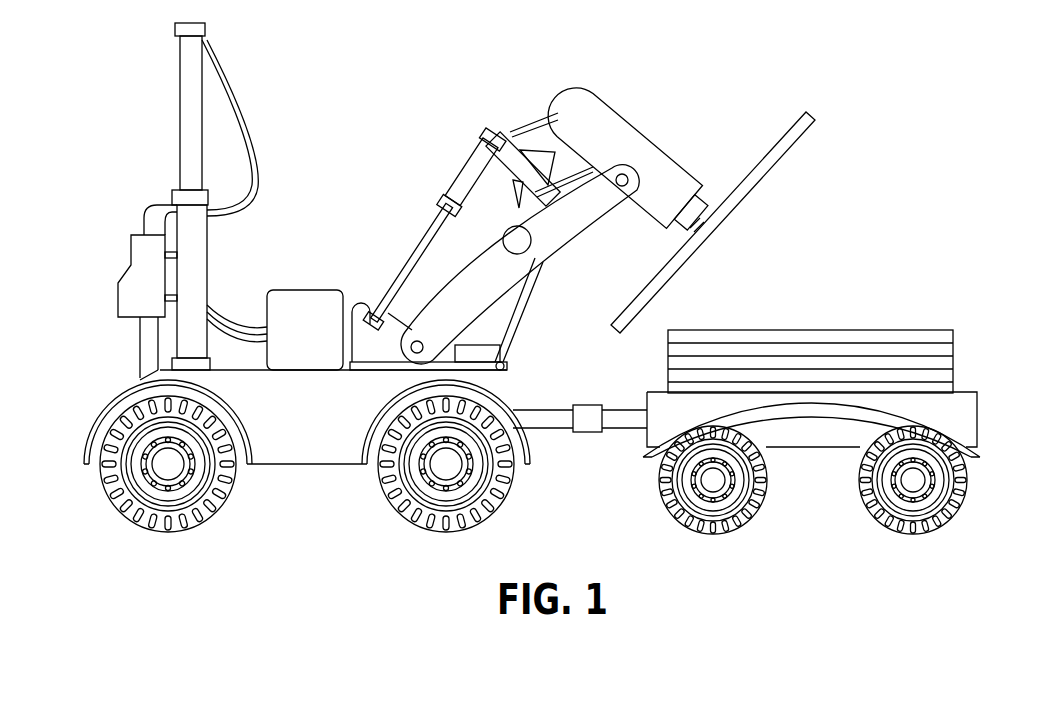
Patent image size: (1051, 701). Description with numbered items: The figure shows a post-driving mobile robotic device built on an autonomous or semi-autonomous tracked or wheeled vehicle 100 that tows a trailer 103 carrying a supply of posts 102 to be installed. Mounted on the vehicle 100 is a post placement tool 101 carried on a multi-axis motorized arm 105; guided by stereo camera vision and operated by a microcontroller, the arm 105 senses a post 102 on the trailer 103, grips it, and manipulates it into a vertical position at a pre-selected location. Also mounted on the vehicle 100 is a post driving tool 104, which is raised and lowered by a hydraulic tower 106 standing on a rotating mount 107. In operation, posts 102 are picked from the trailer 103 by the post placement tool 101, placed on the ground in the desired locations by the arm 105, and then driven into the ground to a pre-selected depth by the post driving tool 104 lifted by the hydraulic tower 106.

The vehicle 100 is at (298, 290).
The post placement tool 101 is at (652, 141).
The posts 102 is at (817, 330).
The trailer 103 is at (978, 434).
The post driving tool 104 is at (131, 240).
The multi-axis motorized arm 105 is at (532, 148).
The hydraulic tower 106 is at (179, 82).
The rotating mount 107 is at (207, 274).